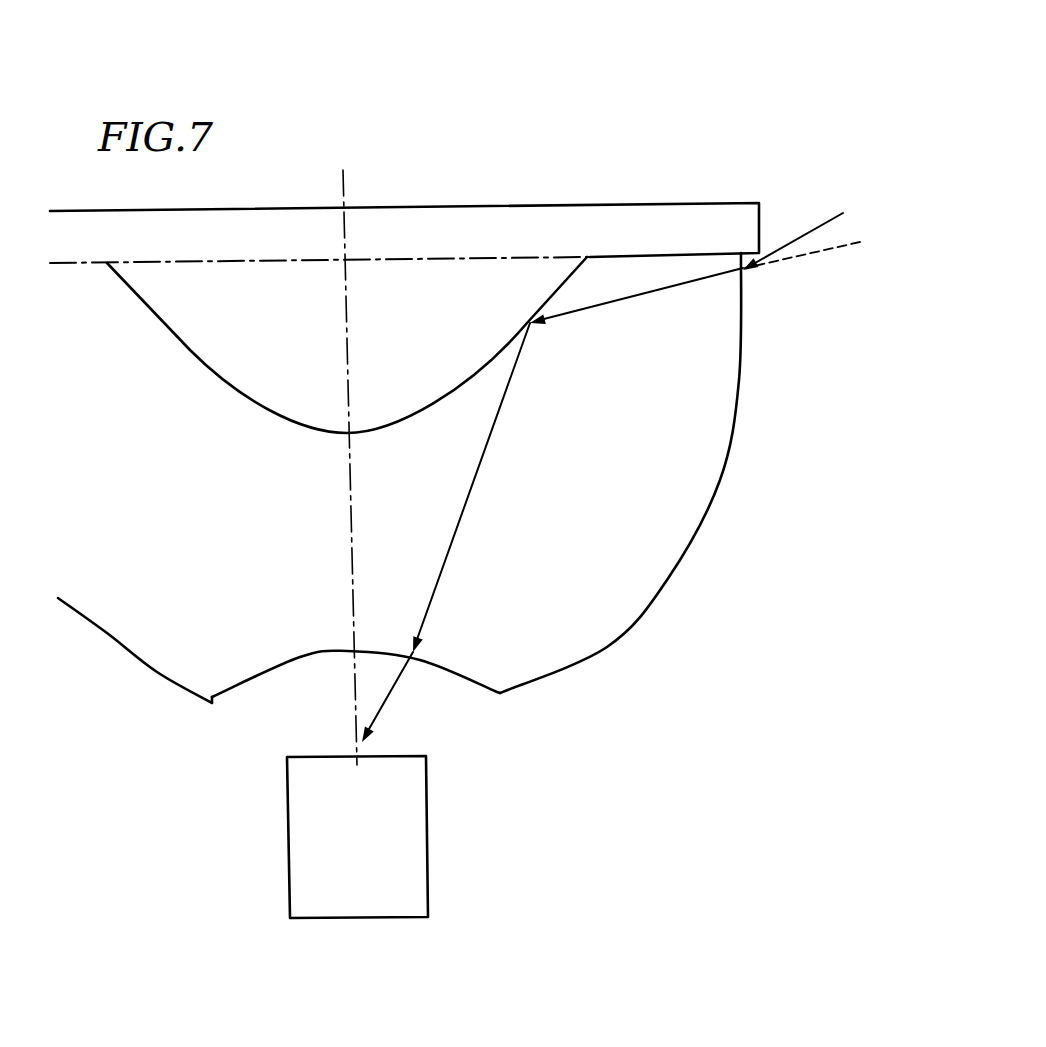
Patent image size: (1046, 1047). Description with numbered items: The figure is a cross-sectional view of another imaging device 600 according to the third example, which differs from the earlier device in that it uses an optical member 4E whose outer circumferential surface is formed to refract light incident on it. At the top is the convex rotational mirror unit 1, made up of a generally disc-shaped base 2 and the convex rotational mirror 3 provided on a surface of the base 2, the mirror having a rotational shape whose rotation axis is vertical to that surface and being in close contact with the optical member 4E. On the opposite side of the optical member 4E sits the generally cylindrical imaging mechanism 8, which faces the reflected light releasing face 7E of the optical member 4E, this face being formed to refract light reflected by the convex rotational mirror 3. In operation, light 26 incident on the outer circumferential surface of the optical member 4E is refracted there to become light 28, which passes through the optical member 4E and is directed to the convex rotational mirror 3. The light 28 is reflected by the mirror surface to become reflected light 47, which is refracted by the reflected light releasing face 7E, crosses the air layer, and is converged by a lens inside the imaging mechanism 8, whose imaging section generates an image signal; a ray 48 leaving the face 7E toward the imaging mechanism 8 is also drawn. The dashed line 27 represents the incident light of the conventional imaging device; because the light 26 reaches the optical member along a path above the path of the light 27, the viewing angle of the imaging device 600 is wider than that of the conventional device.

The imaging device 600 is at (760, 106).
The convex rotational mirror unit 1 is at (542, 135).
The base 2 is at (530, 200).
The convex rotational mirror 3 is at (442, 280).
The optical member 4E is at (650, 652).
The reflected light releasing face 7E is at (263, 668).
The imaging mechanism 8 is at (405, 815).
The light 26 is at (810, 232).
The dashed line (incident light) 27 is at (825, 252).
The light 28 is at (638, 298).
The reflected light 47 is at (490, 437).
The exiting light beam 48 is at (397, 685).